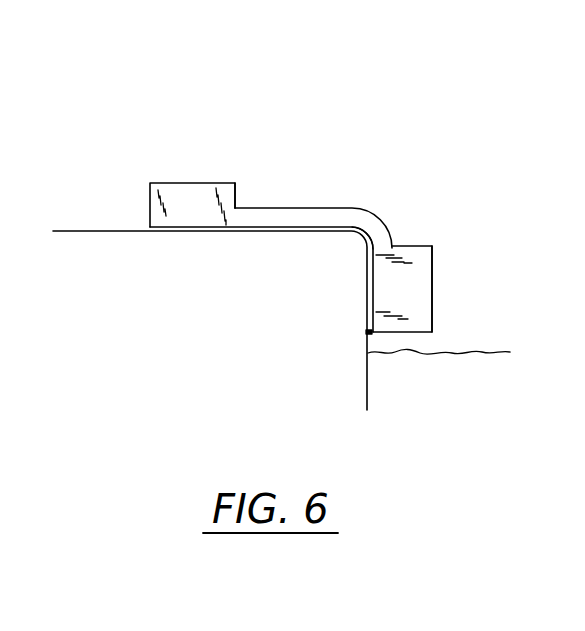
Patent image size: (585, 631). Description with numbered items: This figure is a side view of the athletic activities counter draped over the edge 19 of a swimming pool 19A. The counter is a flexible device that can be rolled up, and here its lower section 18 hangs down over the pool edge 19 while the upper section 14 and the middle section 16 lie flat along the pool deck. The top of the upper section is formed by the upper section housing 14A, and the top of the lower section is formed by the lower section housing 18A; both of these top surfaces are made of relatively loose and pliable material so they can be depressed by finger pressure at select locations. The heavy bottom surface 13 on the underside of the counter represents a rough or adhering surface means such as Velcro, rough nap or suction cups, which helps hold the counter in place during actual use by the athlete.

The heavy bottom surface 13 is at (145, 229).
The upper section 14 is at (201, 178).
The upper section housing 14A is at (238, 200).
The middle section 16 is at (355, 223).
The lower section 18 is at (418, 255).
The lower section housing 18A is at (433, 298).
The edge 19 is at (363, 251).
The swimming pool 19A is at (508, 352).